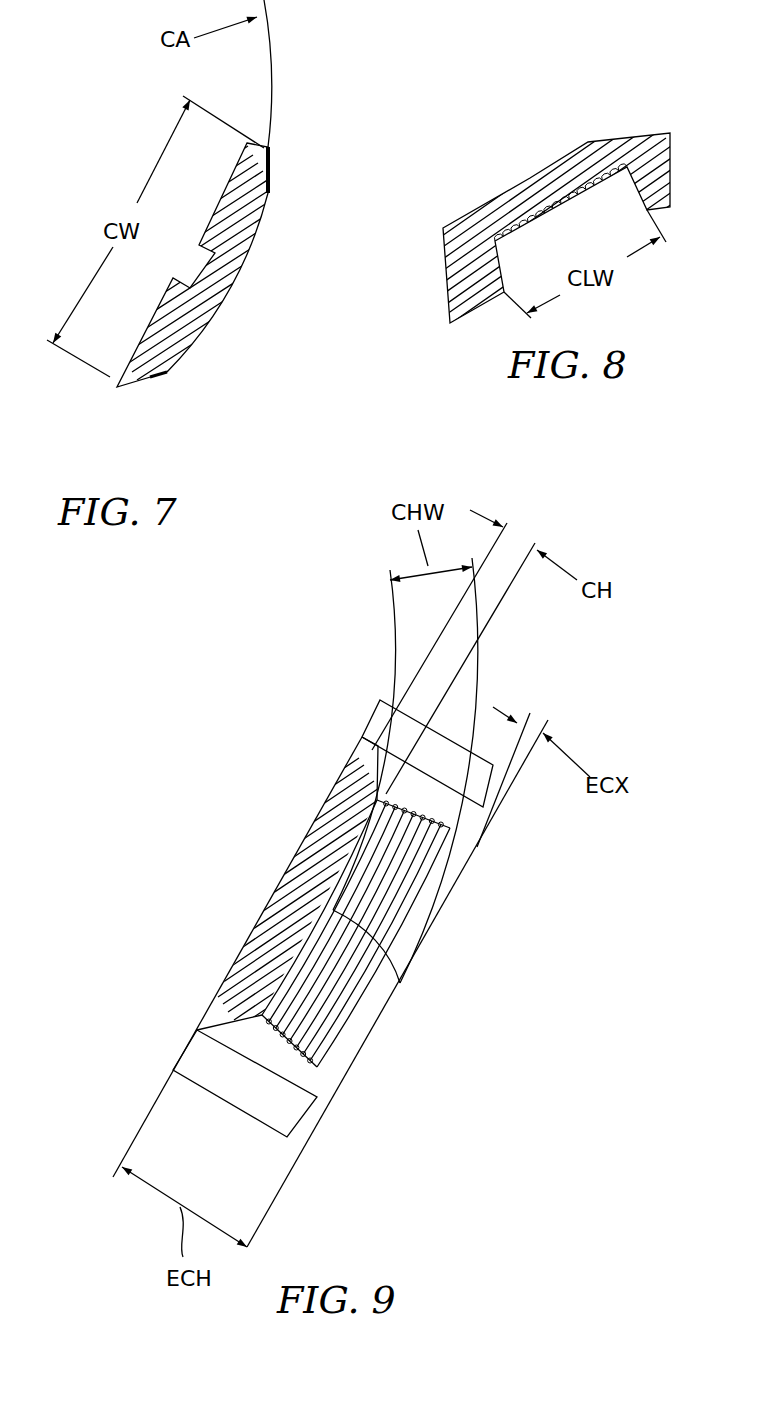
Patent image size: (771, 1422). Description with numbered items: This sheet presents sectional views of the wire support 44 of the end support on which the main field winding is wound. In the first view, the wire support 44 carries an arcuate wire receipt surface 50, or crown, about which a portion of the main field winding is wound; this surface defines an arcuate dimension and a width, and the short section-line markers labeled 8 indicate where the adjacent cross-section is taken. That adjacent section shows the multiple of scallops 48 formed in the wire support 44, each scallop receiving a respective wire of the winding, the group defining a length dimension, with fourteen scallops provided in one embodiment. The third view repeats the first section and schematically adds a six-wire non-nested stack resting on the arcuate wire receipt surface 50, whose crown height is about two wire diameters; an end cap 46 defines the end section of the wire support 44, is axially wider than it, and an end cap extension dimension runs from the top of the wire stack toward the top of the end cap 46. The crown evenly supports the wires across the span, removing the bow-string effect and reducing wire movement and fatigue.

In FIG. 7, the section line indicator for FIG. 8 is at (123, 343).
In FIG. 9, the wire support 44 is at (173, 1015).
In FIG. 9, the end cap 46 is at (250, 1123).
In FIG. 7, the scallops 48 is at (273, 163).
In FIG. 7, the arcuate wire receipt surface 50 is at (252, 237).
In FIG. 8, the arcuate wire receipt surface 50 is at (556, 226).
In FIG. 9, the arcuate wire receipt surface 50 is at (400, 983).